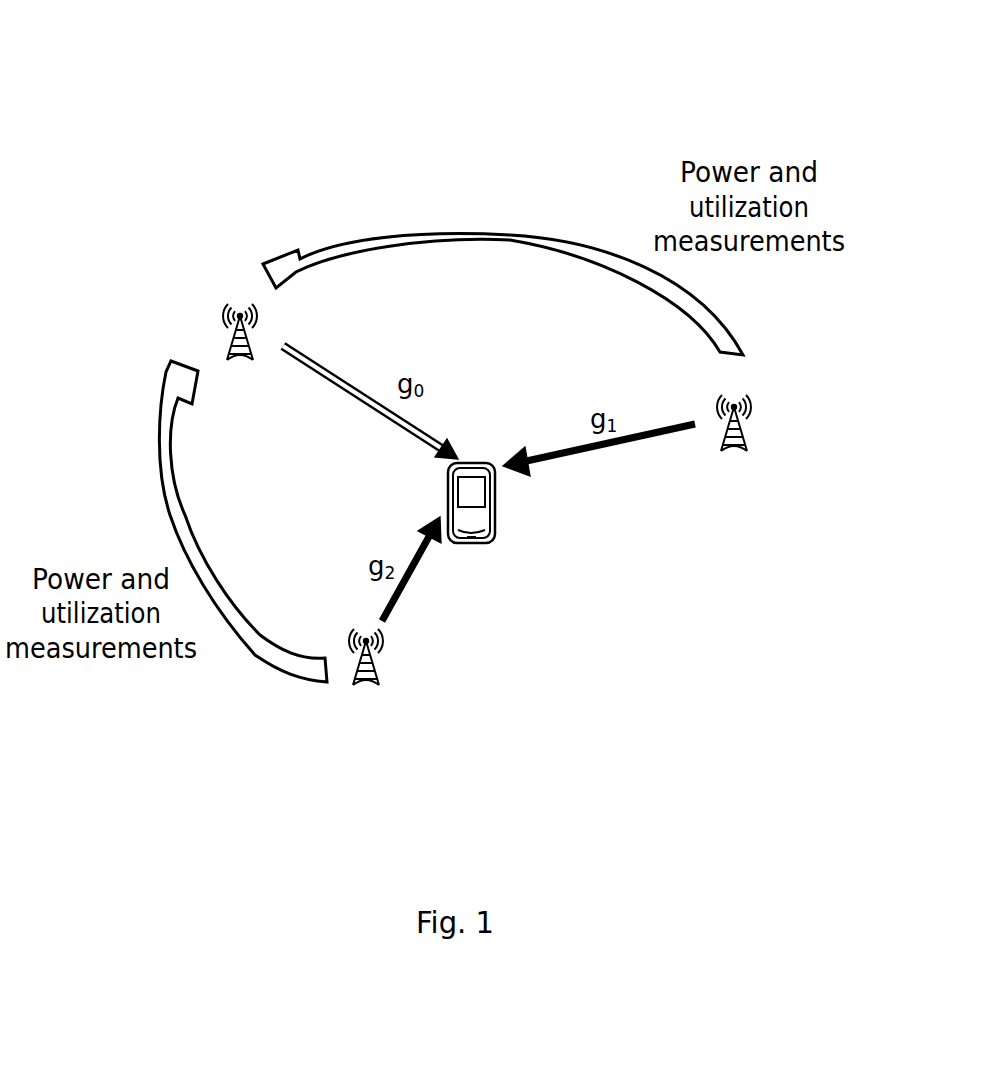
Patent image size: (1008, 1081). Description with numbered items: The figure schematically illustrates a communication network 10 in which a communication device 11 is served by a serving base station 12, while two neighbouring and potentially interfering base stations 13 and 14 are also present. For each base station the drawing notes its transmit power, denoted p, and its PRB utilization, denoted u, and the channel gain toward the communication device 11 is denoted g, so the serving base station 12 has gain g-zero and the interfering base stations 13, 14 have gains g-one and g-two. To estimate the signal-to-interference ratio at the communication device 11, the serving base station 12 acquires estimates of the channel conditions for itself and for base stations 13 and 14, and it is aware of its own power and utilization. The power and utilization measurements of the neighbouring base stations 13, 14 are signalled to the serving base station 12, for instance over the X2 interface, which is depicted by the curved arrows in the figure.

The communication network 10 is at (228, 148).
The communication device 11 is at (497, 515).
The serving base station 12 is at (210, 338).
The neighbouring base station 13 is at (767, 418).
The neighbouring base station 14 is at (415, 660).